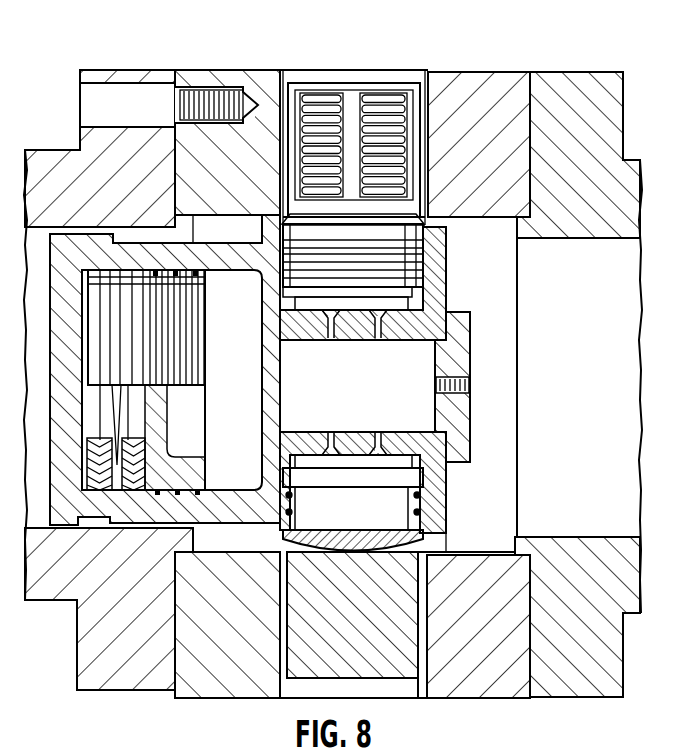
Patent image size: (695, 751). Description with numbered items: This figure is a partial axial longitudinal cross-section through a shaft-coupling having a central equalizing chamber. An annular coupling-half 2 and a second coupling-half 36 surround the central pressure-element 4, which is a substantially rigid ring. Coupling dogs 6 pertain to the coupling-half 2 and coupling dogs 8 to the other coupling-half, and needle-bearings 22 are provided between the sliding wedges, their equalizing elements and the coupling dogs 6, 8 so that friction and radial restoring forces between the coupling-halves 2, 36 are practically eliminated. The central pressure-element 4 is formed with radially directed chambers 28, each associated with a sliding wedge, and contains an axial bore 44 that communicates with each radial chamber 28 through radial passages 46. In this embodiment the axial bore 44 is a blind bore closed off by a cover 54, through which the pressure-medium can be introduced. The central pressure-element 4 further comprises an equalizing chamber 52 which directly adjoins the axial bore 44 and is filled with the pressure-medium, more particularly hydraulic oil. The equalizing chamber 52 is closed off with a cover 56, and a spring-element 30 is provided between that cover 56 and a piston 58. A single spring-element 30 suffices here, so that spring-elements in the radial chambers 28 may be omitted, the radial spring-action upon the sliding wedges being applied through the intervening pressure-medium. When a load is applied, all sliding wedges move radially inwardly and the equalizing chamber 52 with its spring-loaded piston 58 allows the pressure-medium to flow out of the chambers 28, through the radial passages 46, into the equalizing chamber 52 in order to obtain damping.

The coupling-half 2 is at (563, 95).
The central pressure-element 4 is at (430, 292).
The coupling dogs 6 is at (467, 95).
The coupling dogs 8 is at (260, 82).
The needle-bearings 22 is at (388, 127).
The radial chambers 28 is at (417, 265).
The spring-element 30 is at (127, 407).
The second coupling-half 36 is at (95, 68).
The axial bore 44 is at (417, 383).
The radial passages 46 is at (332, 342).
The equalizing chamber 52 is at (242, 310).
The cover 54 is at (452, 344).
The cover 56 is at (68, 235).
The piston 58 is at (185, 476).